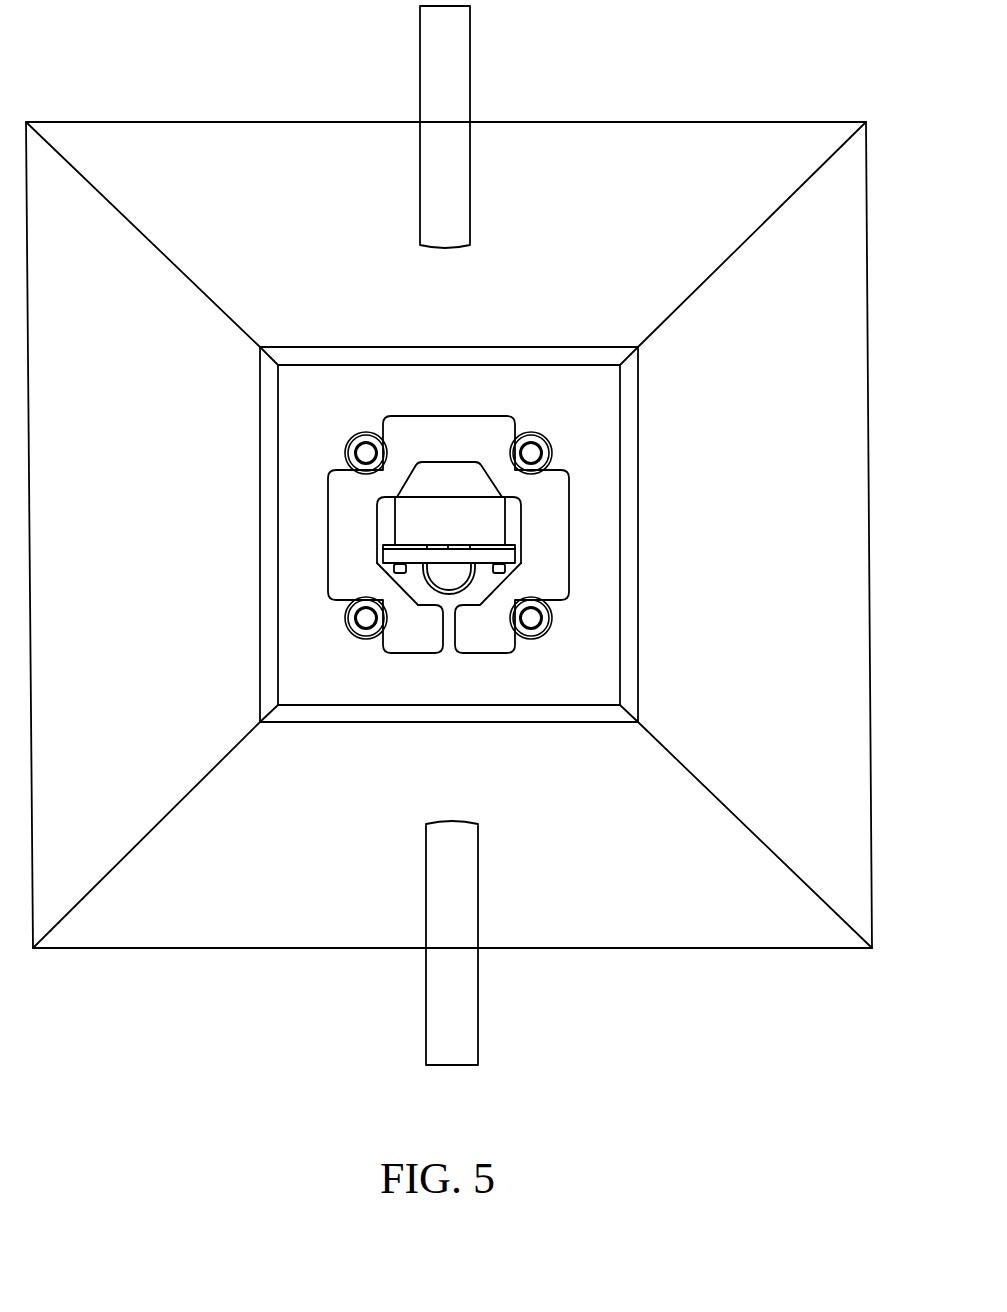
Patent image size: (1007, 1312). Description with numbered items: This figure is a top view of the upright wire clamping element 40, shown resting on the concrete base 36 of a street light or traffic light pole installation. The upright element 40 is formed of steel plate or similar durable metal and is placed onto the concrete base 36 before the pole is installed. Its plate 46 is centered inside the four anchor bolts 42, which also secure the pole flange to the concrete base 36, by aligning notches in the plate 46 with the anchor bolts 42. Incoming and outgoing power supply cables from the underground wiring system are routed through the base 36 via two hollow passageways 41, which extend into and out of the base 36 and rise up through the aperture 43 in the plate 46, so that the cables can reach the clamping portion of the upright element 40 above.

The concrete base 36 is at (693, 912).
The upright element 40 is at (453, 480).
The passageways 41 is at (462, 63).
The anchor bolts 42 is at (347, 450).
The aperture 43 is at (423, 595).
The plate 46 is at (560, 552).